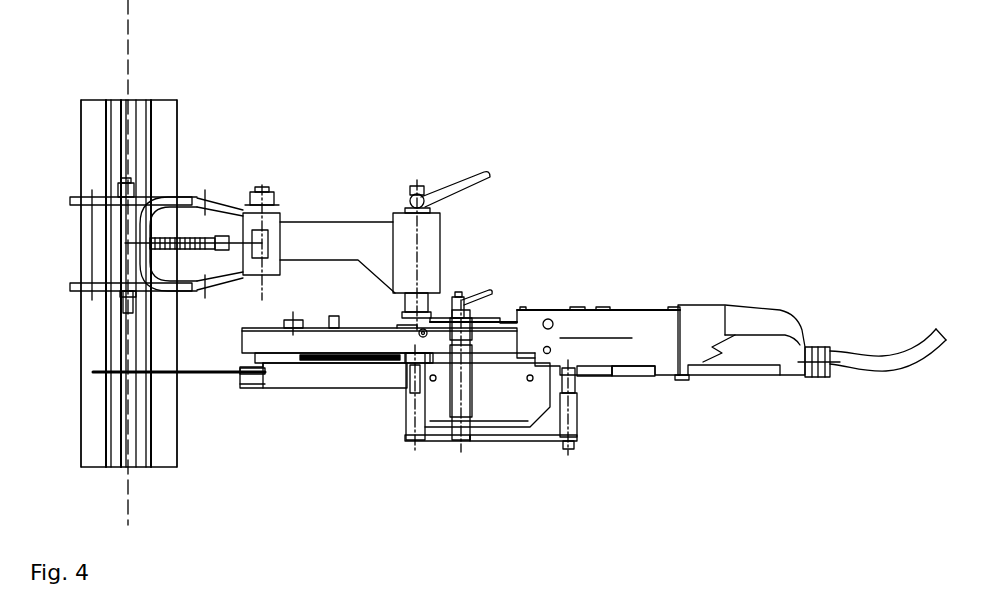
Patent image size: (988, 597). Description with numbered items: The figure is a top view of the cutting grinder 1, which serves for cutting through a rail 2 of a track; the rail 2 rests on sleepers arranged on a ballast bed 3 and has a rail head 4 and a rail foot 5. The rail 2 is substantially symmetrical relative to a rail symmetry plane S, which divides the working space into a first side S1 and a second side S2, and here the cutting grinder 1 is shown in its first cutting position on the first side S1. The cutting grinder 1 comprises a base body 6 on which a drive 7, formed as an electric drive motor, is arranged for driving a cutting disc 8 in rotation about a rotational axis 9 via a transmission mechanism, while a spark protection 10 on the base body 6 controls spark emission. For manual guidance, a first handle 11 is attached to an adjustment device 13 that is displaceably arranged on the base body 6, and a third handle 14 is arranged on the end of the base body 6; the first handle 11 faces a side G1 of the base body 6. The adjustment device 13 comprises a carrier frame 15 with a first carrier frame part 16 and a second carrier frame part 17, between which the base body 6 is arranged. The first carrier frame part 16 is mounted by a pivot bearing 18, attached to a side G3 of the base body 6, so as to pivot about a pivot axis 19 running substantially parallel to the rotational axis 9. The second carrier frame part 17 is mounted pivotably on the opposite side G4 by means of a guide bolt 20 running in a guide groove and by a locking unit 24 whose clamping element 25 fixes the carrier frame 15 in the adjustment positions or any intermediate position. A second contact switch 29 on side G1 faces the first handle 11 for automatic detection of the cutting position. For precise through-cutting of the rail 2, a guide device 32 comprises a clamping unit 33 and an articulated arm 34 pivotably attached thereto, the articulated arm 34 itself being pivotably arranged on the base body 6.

The cutting grinder 1 is at (562, 130).
The rail 2 is at (80, 372).
The ballast bed 3 is at (379, 415).
The rail head 4 is at (116, 347).
The rail foot 5 is at (92, 394).
The base body 6 is at (663, 307).
The drive 7 is at (502, 413).
The cutting disc 8 is at (200, 376).
The rotational axis 9 is at (265, 378).
The spark protection 10 is at (293, 378).
The first handle 11 is at (463, 407).
The adjustment device 13 is at (537, 446).
The third handle 14 is at (745, 318).
The carrier frame 15 is at (447, 443).
The first carrier frame part 16 is at (432, 443).
The second carrier frame part 17 is at (502, 321).
The pivot bearing 18 is at (579, 377).
The pivot axis 19 is at (568, 410).
The guide bolt 20 is at (459, 314).
The locking unit 24 is at (486, 292).
The clamping element 25 is at (493, 317).
The second contact switch 29 is at (433, 318).
The guide device 32 is at (270, 190).
The clamping unit 33 is at (72, 288).
The articulated arm 34 is at (337, 225).
The side G1 is at (379, 342).
The side G3 is at (616, 375).
The side G4 is at (642, 308).
The rail symmetry plane S is at (134, 16).
The first side S1 is at (226, 234).
The second side S2 is at (80, 234).